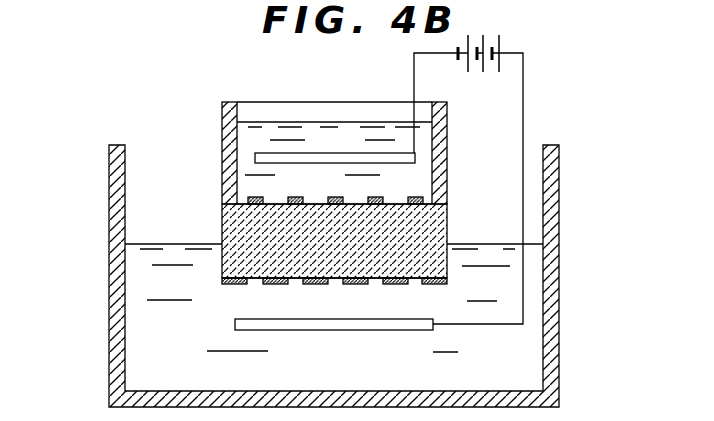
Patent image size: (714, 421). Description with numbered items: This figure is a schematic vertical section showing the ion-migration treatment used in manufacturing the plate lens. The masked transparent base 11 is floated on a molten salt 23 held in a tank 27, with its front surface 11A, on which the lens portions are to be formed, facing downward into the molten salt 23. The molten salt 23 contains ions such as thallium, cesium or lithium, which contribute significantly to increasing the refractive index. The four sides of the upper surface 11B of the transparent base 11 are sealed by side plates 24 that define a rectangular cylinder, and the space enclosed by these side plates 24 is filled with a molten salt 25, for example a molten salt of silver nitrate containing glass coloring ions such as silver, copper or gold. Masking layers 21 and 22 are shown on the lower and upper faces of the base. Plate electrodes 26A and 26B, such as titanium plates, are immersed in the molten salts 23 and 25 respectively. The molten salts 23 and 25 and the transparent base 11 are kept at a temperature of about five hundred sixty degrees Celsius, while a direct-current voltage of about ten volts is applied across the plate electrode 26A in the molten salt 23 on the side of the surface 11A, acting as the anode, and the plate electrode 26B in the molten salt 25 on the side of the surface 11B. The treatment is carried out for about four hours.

The transparent base 11 is at (235, 228).
The front surface 11A is at (380, 285).
The surface 11B is at (357, 200).
The masking layer on first surface 21 is at (243, 285).
The masking layer on second surface 22 is at (418, 197).
The molten salt 23 is at (533, 288).
The side plates 24 is at (222, 114).
The molten salt 25 is at (263, 132).
The plate electrode 26A is at (363, 330).
The plate electrode 26B is at (343, 153).
The tank 27 is at (120, 345).